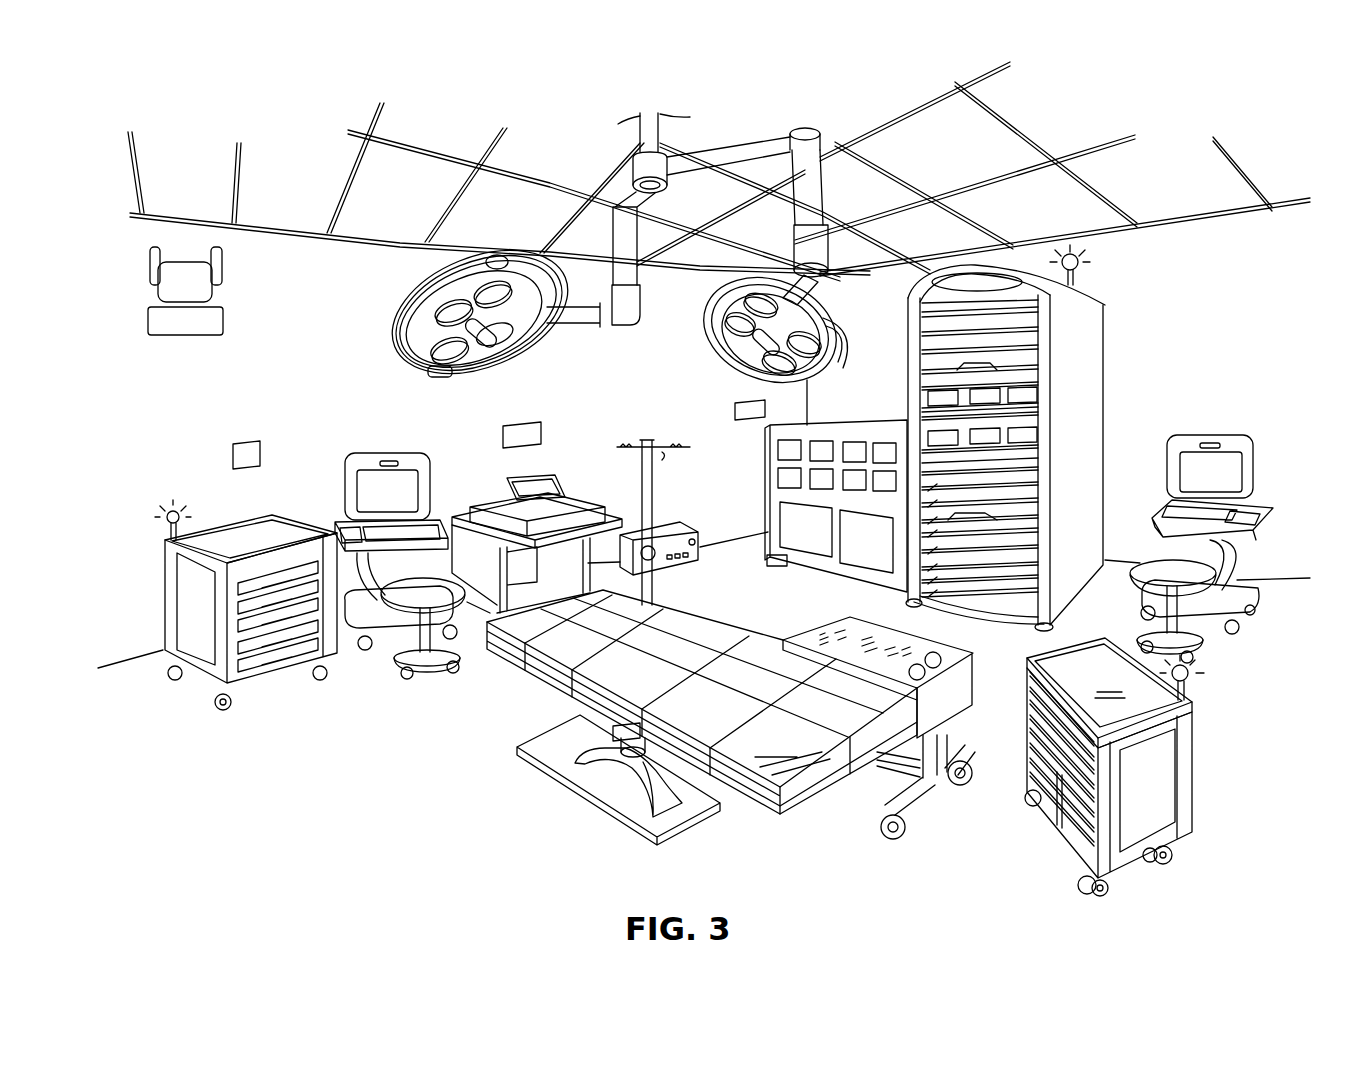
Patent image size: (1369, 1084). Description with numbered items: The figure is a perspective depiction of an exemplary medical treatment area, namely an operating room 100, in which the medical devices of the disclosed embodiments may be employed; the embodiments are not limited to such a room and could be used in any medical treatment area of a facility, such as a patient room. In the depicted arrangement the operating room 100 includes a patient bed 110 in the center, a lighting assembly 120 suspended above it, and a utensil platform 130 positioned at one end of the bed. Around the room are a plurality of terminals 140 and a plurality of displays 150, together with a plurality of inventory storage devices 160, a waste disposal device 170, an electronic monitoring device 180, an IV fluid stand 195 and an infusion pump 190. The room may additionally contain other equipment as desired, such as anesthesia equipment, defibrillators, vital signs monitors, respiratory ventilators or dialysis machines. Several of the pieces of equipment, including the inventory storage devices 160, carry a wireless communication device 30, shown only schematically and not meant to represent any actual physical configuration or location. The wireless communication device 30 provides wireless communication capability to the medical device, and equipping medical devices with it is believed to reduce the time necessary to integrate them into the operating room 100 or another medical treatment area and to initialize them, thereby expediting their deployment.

The wireless communication device 30 is at (1105, 266).
The operating room 100 is at (127, 378).
The patient bed 110 is at (795, 803).
The lighting assembly 120 is at (822, 185).
The utensil platform 130 is at (948, 645).
The terminal 140 is at (342, 512).
The display 150 is at (348, 480).
The inventory storage device 160 is at (165, 596).
The waste disposal device 170 is at (773, 437).
The electronic monitoring device 180 is at (530, 478).
The infusion pump 190 is at (703, 553).
The IV fluid stand 195 is at (653, 497).